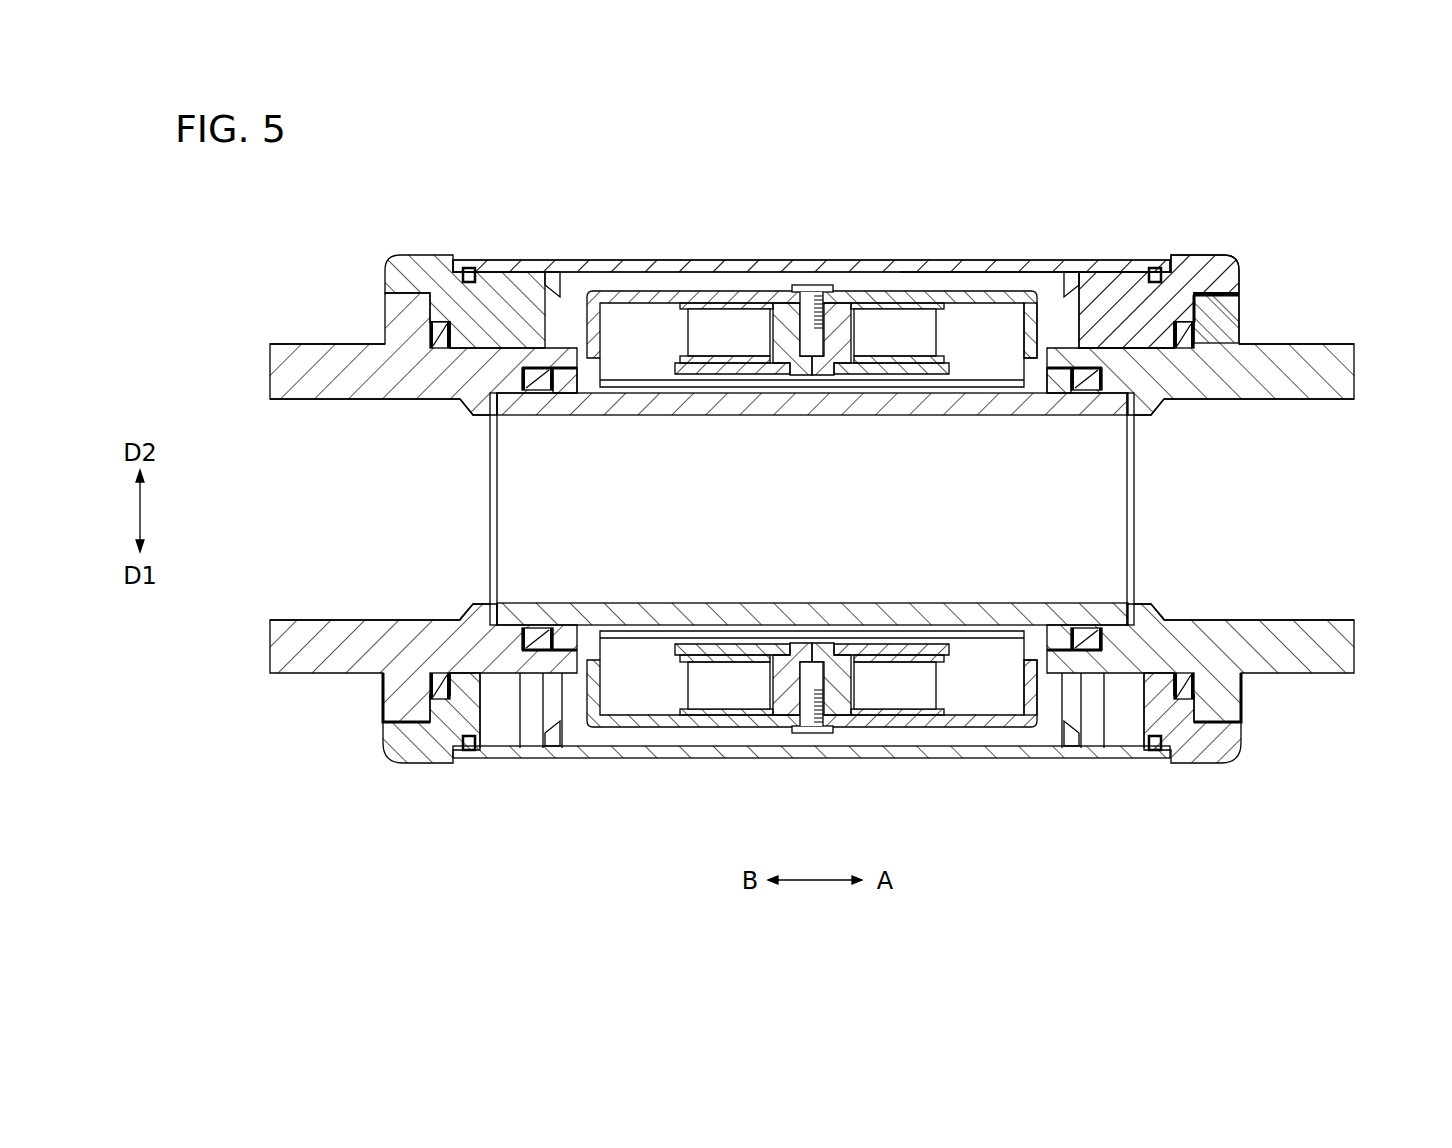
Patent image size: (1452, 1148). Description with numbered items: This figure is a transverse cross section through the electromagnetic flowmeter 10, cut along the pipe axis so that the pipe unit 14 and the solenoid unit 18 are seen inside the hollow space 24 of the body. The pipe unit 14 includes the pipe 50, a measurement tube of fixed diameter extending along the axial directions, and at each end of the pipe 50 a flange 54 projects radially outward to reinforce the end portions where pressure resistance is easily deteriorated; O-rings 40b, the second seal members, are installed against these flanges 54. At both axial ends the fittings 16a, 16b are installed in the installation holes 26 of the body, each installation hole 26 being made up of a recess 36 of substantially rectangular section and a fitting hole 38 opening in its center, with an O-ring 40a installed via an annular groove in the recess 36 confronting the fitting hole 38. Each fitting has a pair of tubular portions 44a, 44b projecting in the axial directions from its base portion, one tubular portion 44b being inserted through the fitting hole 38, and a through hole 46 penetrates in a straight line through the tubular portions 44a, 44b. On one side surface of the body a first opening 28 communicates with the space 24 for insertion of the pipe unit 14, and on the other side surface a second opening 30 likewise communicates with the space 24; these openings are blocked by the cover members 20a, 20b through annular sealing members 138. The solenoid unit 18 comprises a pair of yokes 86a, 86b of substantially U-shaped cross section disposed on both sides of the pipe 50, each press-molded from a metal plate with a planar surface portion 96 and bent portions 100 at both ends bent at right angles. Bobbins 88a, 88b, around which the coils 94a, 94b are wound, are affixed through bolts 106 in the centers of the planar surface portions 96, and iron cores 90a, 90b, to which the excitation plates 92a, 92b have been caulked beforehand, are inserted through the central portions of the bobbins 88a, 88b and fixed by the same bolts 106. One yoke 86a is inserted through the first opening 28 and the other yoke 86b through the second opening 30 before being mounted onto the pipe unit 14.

The electromagnetic flowmeter 10 is at (1383, 153).
The pipe unit 14 is at (1050, 344).
The fitting 16a is at (1339, 332).
The fitting 16b is at (305, 332).
The solenoid unit 18 is at (683, 250).
The cover member 20a is at (1088, 762).
The cover member 20b is at (1085, 262).
The space 24 is at (988, 282).
The installation hole 26 is at (1214, 312).
The first opening 28 is at (497, 724).
The second opening 30 is at (557, 292).
The recess 36 is at (392, 708).
The fitting hole 38 is at (470, 397).
The O-ring (first seal member) 40a is at (437, 678).
The O-ring (second seal member) 40b is at (535, 632).
The tubular portion 44a is at (300, 380).
The tubular portion 44b is at (552, 700).
The through hole 46 is at (315, 468).
The pipe (measurement tube) 50 is at (981, 426).
The flange 54 is at (568, 374).
The yoke 86a is at (652, 720).
The yoke 86b is at (650, 299).
The bobbin 88a is at (888, 643).
The bobbin 88b is at (890, 375).
The iron core 90a is at (806, 642).
The iron core 90b is at (806, 376).
The excitation plate 92a is at (728, 643).
The excitation plate 92b is at (730, 375).
The coil 94a is at (890, 700).
The coil 94b is at (892, 318).
The planar surface portion 96 is at (1026, 330).
The bent portion (barrier wall) 100 is at (618, 297).
The bolt 106 is at (810, 285).
The annular sealing member 138 is at (1154, 268).